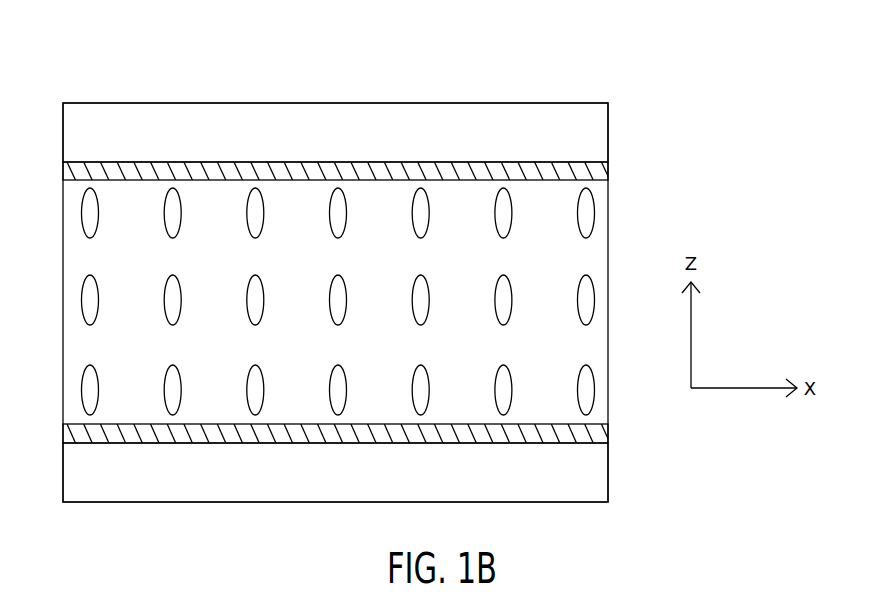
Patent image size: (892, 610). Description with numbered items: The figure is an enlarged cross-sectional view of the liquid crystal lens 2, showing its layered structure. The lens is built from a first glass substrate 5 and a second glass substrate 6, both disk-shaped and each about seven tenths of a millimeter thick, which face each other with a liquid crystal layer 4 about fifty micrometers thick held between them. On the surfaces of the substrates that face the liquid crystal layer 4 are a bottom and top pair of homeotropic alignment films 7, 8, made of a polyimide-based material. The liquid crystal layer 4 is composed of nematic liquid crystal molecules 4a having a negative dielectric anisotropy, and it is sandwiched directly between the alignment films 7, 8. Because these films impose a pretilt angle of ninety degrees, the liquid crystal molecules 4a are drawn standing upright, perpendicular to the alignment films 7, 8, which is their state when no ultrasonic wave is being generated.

The liquid crystal lens 2 is at (335, 66).
The liquid crystal layer 4 is at (355, 301).
The liquid crystal molecules 4a is at (90, 300).
The first glass substrate 5 is at (598, 479).
The second glass substrate 6 is at (592, 128).
The alignment film 7 is at (592, 436).
The alignment film 8 is at (592, 171).